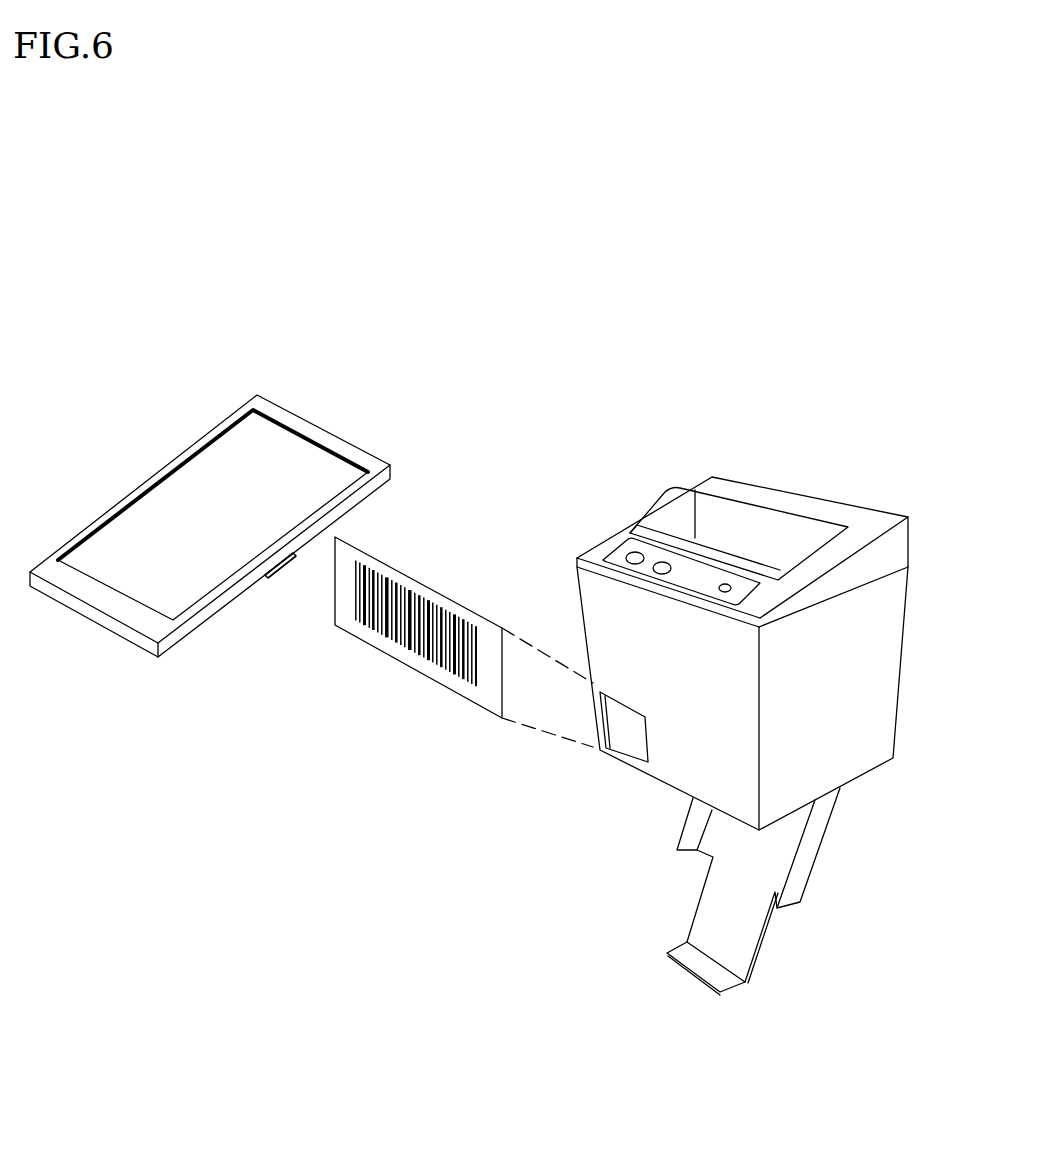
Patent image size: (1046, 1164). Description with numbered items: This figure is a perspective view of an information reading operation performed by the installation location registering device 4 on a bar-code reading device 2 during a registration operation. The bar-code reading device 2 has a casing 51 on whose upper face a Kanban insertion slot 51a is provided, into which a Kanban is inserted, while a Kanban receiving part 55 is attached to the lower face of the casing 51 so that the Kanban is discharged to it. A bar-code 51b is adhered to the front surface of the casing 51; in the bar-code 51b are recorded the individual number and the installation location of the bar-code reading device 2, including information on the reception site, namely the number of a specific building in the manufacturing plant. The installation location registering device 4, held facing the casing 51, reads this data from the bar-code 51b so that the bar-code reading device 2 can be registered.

The installation location registering device 4 is at (348, 437).
The bar-code reading device 2 is at (743, 484).
The casing 51 is at (590, 603).
The Kanban insertion slot 51a is at (770, 540).
The bar-code 51b is at (402, 663).
The Kanban receiving part 55 is at (763, 938).